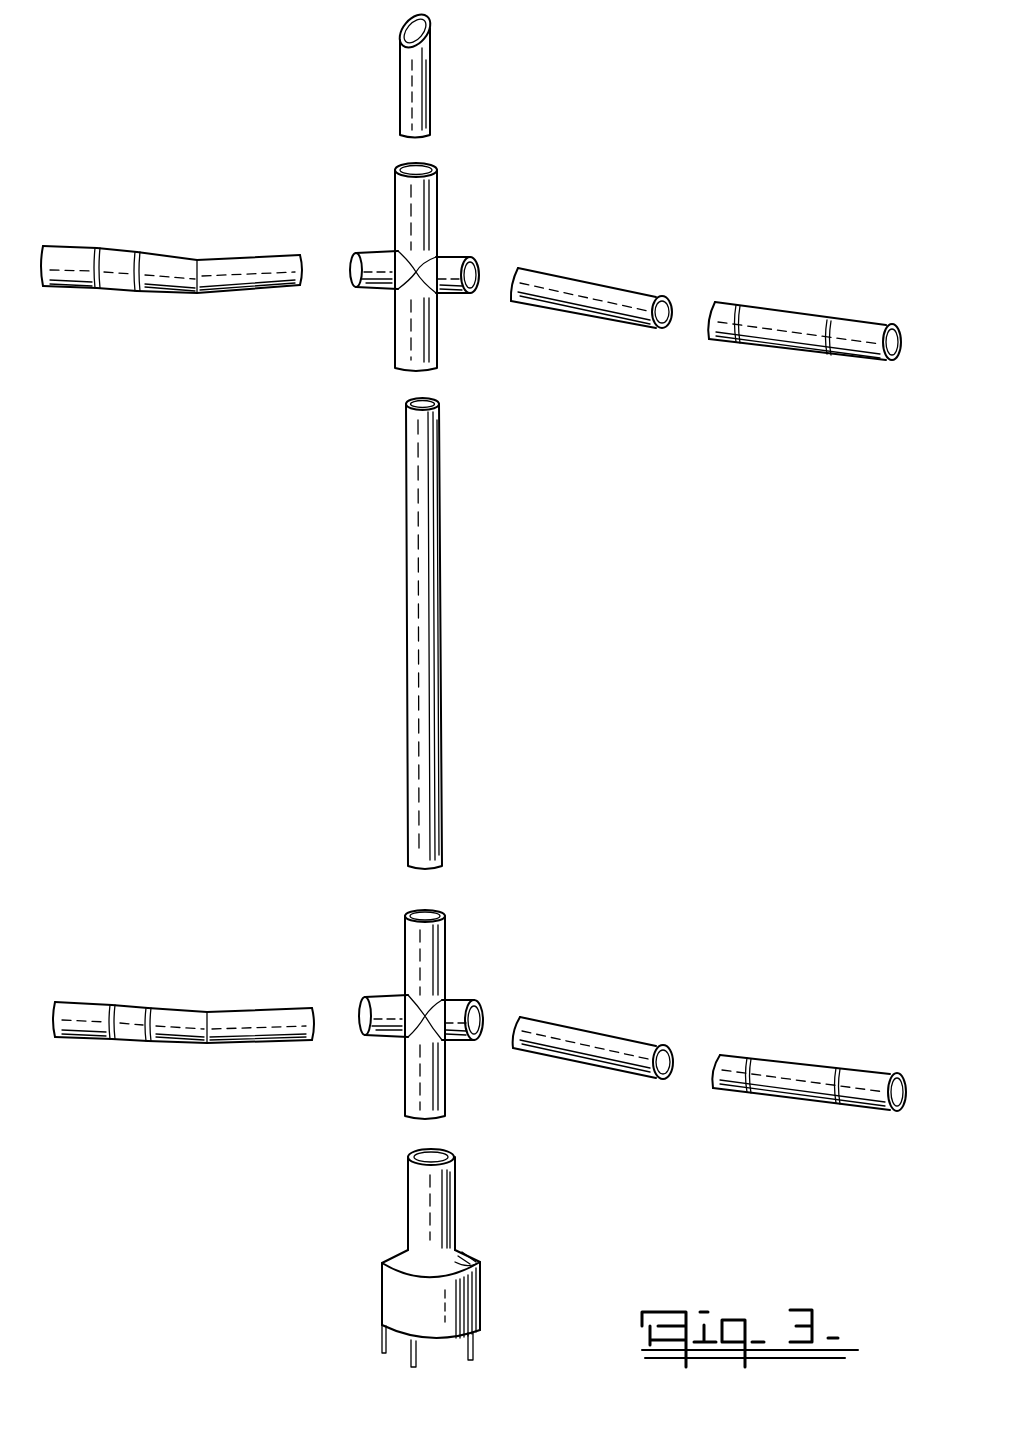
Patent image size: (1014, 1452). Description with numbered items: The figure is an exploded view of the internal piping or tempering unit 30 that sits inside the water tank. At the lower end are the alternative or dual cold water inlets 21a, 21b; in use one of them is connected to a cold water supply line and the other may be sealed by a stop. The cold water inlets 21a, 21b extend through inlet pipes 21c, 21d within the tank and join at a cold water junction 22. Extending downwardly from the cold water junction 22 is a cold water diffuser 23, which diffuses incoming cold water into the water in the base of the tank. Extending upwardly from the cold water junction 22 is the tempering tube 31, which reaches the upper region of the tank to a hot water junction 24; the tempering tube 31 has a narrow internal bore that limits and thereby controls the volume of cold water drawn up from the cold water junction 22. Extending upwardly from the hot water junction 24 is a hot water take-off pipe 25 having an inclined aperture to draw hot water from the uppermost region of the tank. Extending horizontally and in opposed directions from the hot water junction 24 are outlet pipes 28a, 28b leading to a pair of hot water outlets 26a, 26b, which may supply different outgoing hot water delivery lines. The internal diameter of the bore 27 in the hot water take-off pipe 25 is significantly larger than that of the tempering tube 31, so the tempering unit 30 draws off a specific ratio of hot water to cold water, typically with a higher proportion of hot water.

The cold water inlet 21a is at (83, 1028).
The cold water inlet 21b is at (817, 1085).
The inlet pipe 21c is at (252, 1020).
The inlet pipe 21d is at (602, 1040).
The cold water junction 22 is at (477, 962).
The cold water diffuser 23 is at (494, 1247).
The hot water junction 24 is at (446, 283).
The hot water take-off pipe 25 is at (412, 90).
The hot water outlet 26a is at (87, 287).
The hot water outlet 26b is at (862, 345).
The bore of the hot water take-off pipe 27 is at (417, 210).
The outlet pipe 28a is at (220, 290).
The outlet pipe 28b is at (617, 300).
The tempering unit 30 is at (495, 633).
The tempering tube 31 is at (427, 664).